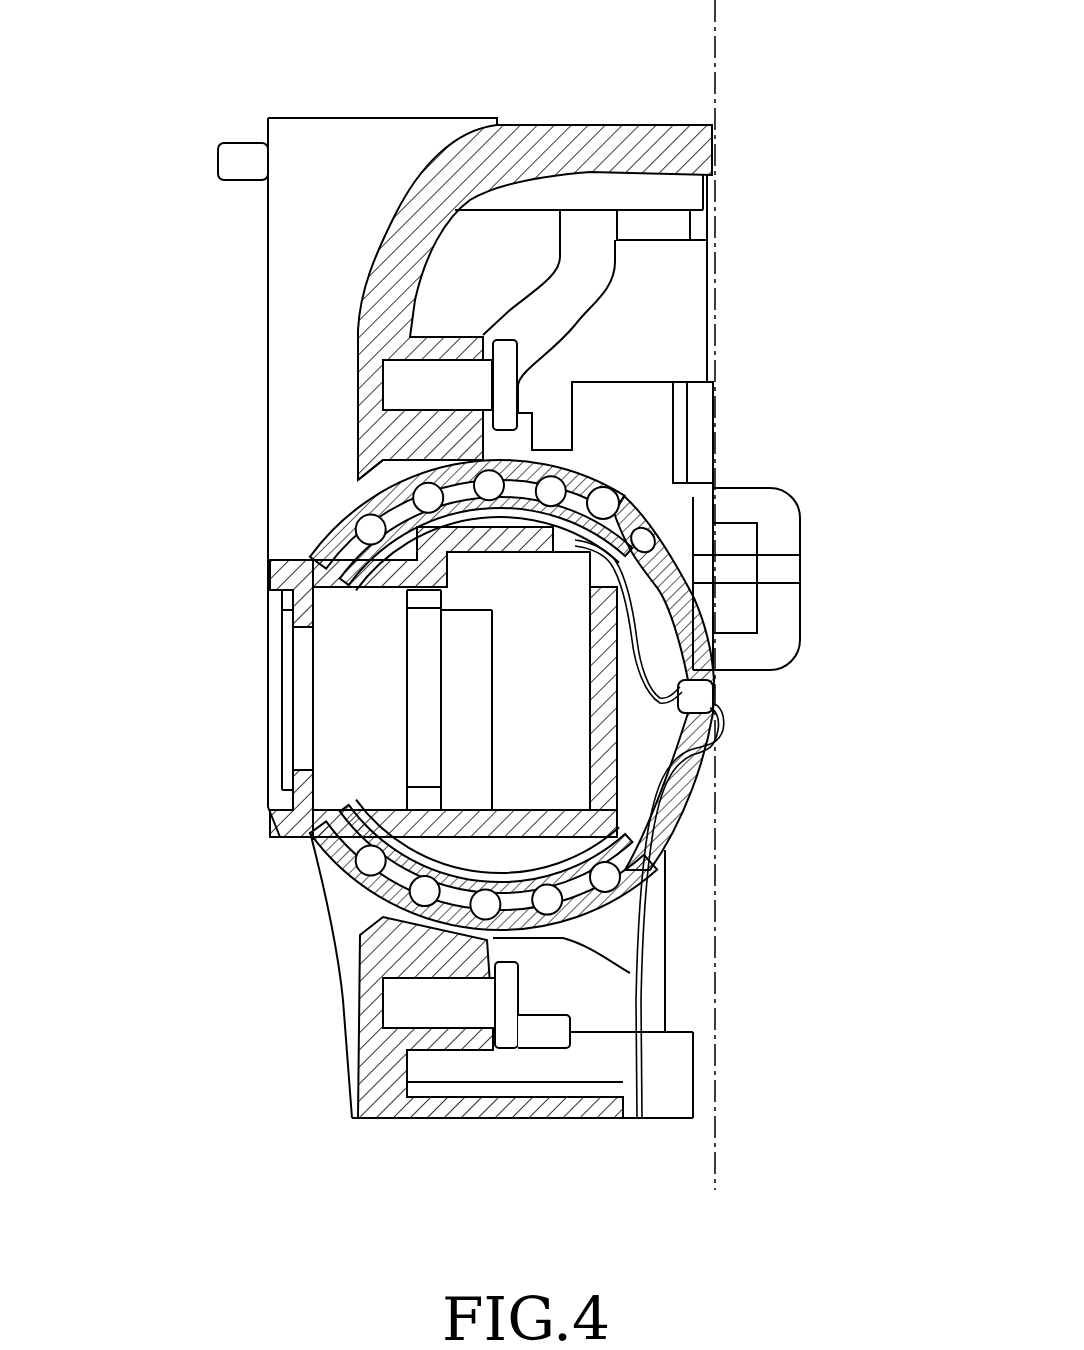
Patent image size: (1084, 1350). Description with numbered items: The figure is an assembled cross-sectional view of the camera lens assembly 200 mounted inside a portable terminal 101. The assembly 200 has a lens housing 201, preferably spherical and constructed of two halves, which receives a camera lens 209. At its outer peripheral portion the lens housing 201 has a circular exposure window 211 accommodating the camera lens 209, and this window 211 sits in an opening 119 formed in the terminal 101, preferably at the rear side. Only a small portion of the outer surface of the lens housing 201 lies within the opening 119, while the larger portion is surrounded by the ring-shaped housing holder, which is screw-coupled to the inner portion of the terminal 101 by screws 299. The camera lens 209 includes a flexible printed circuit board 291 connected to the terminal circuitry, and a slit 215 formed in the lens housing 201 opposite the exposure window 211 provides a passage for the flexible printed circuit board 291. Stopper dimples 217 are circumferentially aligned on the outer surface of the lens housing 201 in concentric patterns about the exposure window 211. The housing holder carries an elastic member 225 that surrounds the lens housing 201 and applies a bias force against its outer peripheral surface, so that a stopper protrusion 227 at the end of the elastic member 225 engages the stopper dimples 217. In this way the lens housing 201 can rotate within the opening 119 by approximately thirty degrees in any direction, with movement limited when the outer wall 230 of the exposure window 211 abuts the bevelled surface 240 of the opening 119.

The portable terminal 101 is at (317, 148).
The opening 119 is at (360, 487).
The camera lens assembly 200 is at (246, 867).
The lens housing 201 is at (657, 760).
The camera lens 209 is at (330, 668).
The exposure window 211 is at (282, 712).
The slit 215 is at (713, 688).
The stopper dimples 217 is at (645, 525).
The elastic member 225 is at (598, 468).
The stopper protrusions 227 is at (660, 500).
The outer wall 230 is at (295, 840).
The bevelled surface 240 is at (357, 470).
The flexible printed circuit board 291 is at (668, 843).
The screws 299 is at (705, 360).